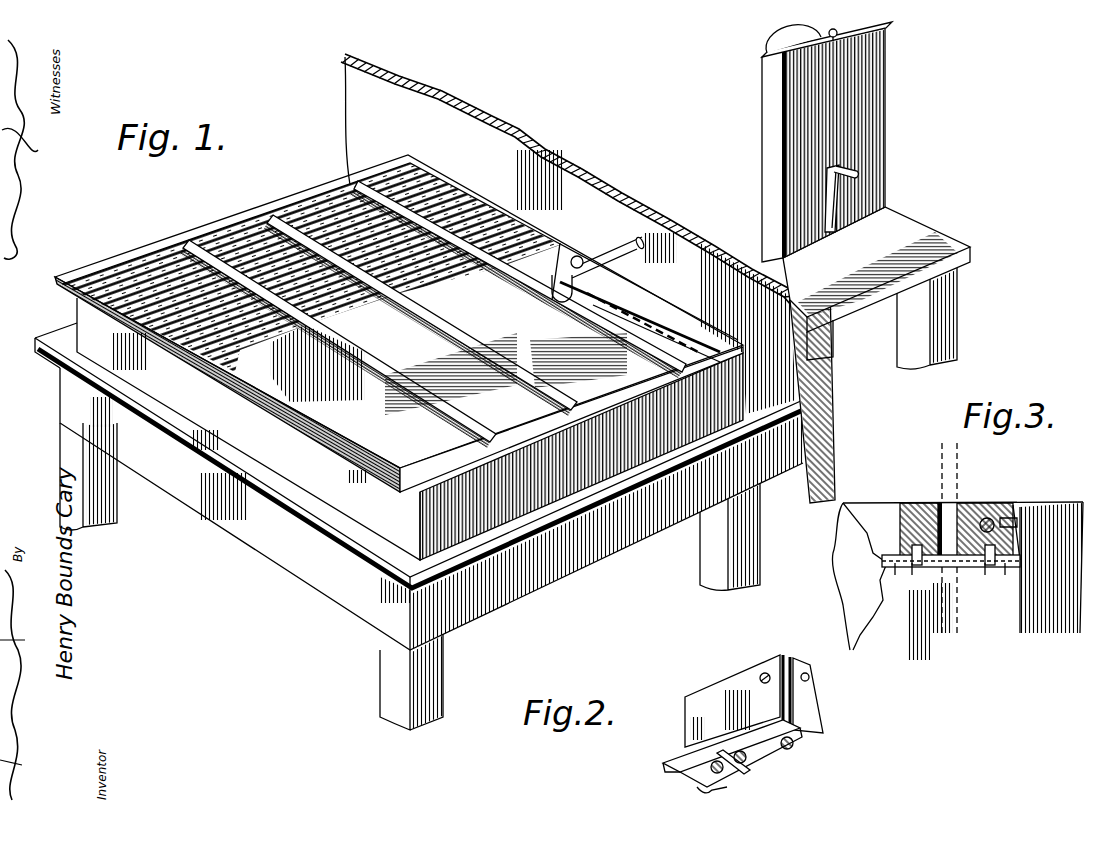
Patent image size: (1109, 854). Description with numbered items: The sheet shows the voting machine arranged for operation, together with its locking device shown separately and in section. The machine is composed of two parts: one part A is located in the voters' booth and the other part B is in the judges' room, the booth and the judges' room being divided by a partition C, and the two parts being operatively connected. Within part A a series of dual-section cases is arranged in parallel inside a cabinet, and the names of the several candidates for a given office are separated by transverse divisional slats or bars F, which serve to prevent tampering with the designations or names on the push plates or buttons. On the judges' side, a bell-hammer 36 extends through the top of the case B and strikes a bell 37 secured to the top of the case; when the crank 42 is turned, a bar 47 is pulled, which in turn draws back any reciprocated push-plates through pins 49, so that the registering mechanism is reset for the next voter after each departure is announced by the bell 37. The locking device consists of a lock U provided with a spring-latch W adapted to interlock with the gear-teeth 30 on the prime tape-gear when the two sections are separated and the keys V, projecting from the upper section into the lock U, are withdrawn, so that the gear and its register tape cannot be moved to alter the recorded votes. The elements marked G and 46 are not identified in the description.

In FIG. 1, the booth part of the machine A is at (205, 224).
In FIG. 1, the grid frame G is at (399, 357).
In FIG. 1, the transverse divisional slats or bars F is at (425, 395).
In FIG. 1, the partition C is at (600, 200).
In FIG. 1, the judges' room part of the machine B is at (886, 143).
In FIG. 1, the bell-hammer 36 is at (834, 29).
In FIG. 1, the bell 37 is at (793, 39).
In FIG. 1, the crank 42 is at (842, 172).
In FIG. 1, the ring 46 is at (565, 258).
In FIG. 1, the bar 47 is at (590, 262).
In FIG. 1, the pins 49 is at (590, 278).
In FIG. 3, the lock U is at (950, 579).
In FIG. 2, the lock U is at (713, 690).
In FIG. 3, the spring-latch W is at (893, 555).
In FIG. 2, the spring-latch W is at (680, 780).
In FIG. 3, the keys V is at (952, 570).
In FIG. 3, the gear-teeth 30 is at (872, 553).